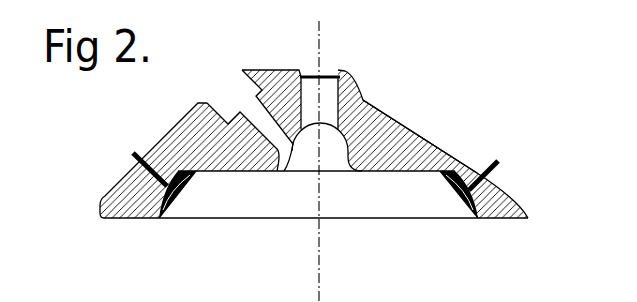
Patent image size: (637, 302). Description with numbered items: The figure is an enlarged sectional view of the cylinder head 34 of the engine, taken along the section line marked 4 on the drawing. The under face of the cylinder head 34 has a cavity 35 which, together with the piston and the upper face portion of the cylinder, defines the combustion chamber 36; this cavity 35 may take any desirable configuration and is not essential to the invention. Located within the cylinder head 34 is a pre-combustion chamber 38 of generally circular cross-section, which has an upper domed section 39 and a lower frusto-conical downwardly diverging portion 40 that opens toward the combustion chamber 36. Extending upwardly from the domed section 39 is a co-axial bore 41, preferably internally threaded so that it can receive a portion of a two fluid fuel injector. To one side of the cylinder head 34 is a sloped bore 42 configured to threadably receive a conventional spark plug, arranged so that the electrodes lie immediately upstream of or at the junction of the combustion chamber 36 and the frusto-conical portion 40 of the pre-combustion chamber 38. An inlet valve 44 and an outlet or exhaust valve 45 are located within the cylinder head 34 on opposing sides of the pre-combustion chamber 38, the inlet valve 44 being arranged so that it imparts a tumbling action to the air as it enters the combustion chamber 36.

The section line 4- 4 is at (319, 21).
The cylinder head 34 is at (455, 150).
The cavity 35 is at (414, 210).
The combustion chamber 36 is at (397, 263).
The pre-combustion chamber 38 is at (310, 125).
The upper domed section 39 is at (333, 148).
The lower frusto-conical downwardly diverging portion 40 is at (343, 171).
The co-axial bore 41 is at (323, 103).
The sloped bore 42 is at (228, 97).
The inlet valve 44 is at (133, 160).
The outlet or exhaust valve 45 is at (500, 167).